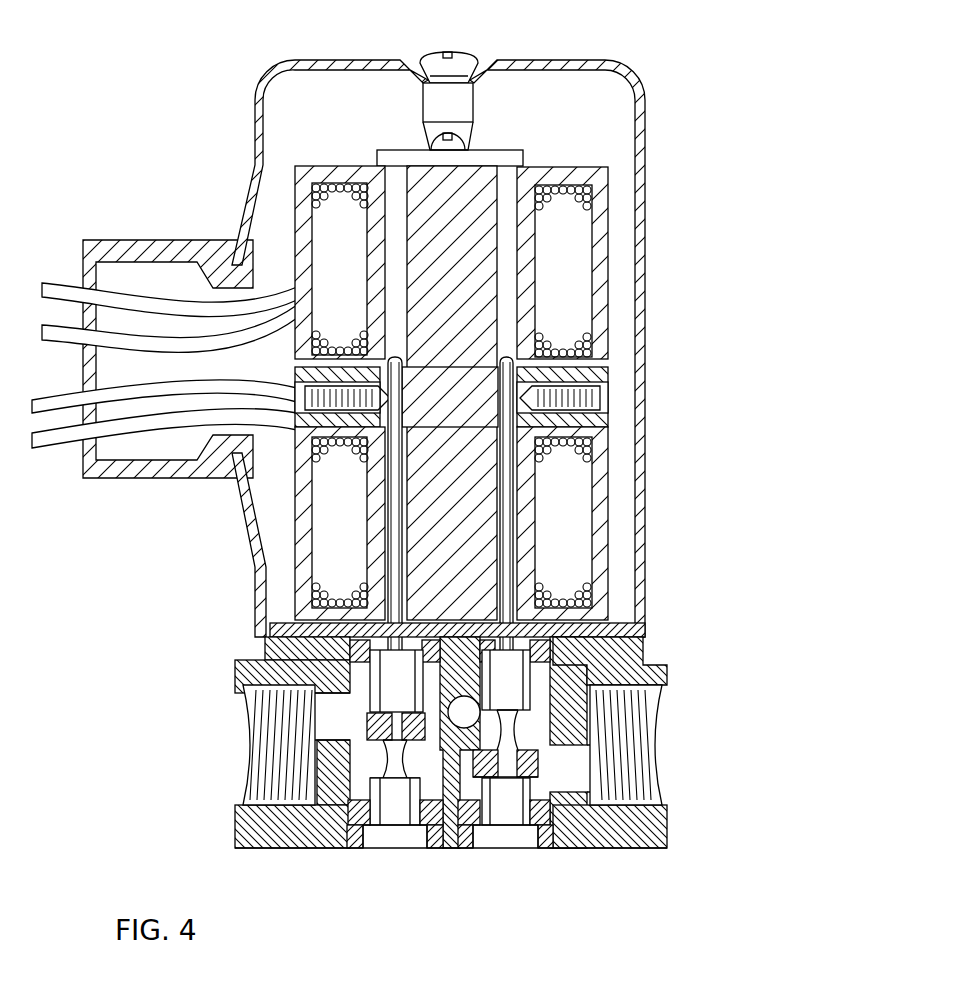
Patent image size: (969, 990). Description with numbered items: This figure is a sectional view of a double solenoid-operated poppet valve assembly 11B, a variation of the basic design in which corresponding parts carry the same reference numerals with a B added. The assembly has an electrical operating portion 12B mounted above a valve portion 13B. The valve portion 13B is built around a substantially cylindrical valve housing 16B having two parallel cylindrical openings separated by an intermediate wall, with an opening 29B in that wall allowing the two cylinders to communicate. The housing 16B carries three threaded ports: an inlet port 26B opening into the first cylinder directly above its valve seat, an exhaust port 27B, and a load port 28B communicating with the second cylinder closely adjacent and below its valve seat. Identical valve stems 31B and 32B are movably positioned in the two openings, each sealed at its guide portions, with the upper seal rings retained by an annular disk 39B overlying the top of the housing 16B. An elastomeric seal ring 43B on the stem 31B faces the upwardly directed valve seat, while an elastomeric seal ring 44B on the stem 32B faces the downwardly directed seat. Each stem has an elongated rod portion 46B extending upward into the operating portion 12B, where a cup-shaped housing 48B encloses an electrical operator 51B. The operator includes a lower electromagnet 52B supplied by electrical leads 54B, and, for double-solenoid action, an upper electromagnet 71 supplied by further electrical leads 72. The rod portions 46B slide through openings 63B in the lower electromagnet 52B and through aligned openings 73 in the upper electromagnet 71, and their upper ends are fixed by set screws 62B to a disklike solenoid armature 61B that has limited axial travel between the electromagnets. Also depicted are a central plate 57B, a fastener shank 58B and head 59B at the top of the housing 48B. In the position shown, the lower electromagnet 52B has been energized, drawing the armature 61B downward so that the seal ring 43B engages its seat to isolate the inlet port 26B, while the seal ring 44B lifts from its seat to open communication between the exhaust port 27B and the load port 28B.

The valve assembly 11B is at (677, 418).
The electrical operating portion 12B is at (647, 285).
The valve portion 13B is at (665, 847).
The valve housing 16B is at (280, 832).
The inlet port 26B is at (268, 790).
The exhaust port 27B is at (540, 718).
The load port 28B is at (638, 782).
The opening 29B is at (440, 785).
The valve stem 31B is at (392, 829).
The valve stem 32B is at (507, 830).
The annular disk 39B is at (636, 632).
The seal ring 43B is at (368, 722).
The seal ring 44B is at (538, 772).
The rod portion 46B is at (510, 552).
The housing 48B is at (633, 90).
The electrical operator 51B is at (293, 514).
The lower electromagnet 52B is at (573, 570).
The electrical leads 54B is at (53, 400).
The core plate 57B is at (413, 160).
The screw shank 58B is at (458, 105).
The screw head 59B is at (457, 70).
The solenoid armature 61B is at (449, 383).
The set screw 62B is at (582, 397).
The opening 63B is at (512, 505).
The upper electromagnet 71 is at (593, 218).
The electrical leads 72 is at (62, 333).
The opening 73 is at (393, 200).